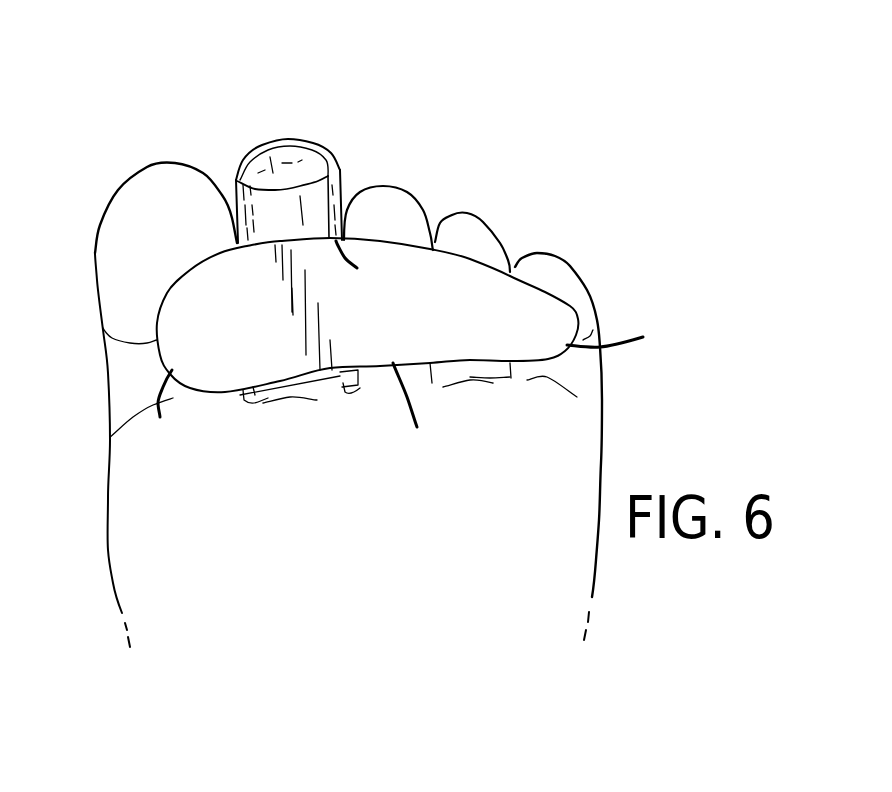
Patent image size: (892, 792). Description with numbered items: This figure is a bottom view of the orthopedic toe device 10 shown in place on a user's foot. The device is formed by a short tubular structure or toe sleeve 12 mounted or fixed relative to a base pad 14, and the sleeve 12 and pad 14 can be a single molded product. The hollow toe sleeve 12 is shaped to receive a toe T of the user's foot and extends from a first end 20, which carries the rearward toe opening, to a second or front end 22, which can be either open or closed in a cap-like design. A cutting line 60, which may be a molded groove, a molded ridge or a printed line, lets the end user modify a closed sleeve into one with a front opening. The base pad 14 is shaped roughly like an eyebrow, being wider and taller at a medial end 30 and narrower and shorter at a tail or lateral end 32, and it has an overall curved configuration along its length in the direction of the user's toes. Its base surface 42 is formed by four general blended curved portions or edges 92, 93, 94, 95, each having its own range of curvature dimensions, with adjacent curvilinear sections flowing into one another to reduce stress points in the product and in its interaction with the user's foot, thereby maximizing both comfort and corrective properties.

The toe T is at (267, 147).
The orthopedic toe device 10 is at (293, 154).
The toe sleeve 12 is at (232, 181).
The base pad 14 is at (388, 232).
The first end 20 is at (320, 390).
The second end 22 is at (280, 148).
The medial end 30 is at (157, 352).
The lateral end 32 is at (578, 325).
The base surface 42 is at (453, 278).
The cutting line 60 is at (302, 180).
The curved portion 92 is at (370, 272).
The curved portion 93 is at (629, 332).
The curved portion 94 is at (420, 419).
The curved portion 95 is at (167, 424).